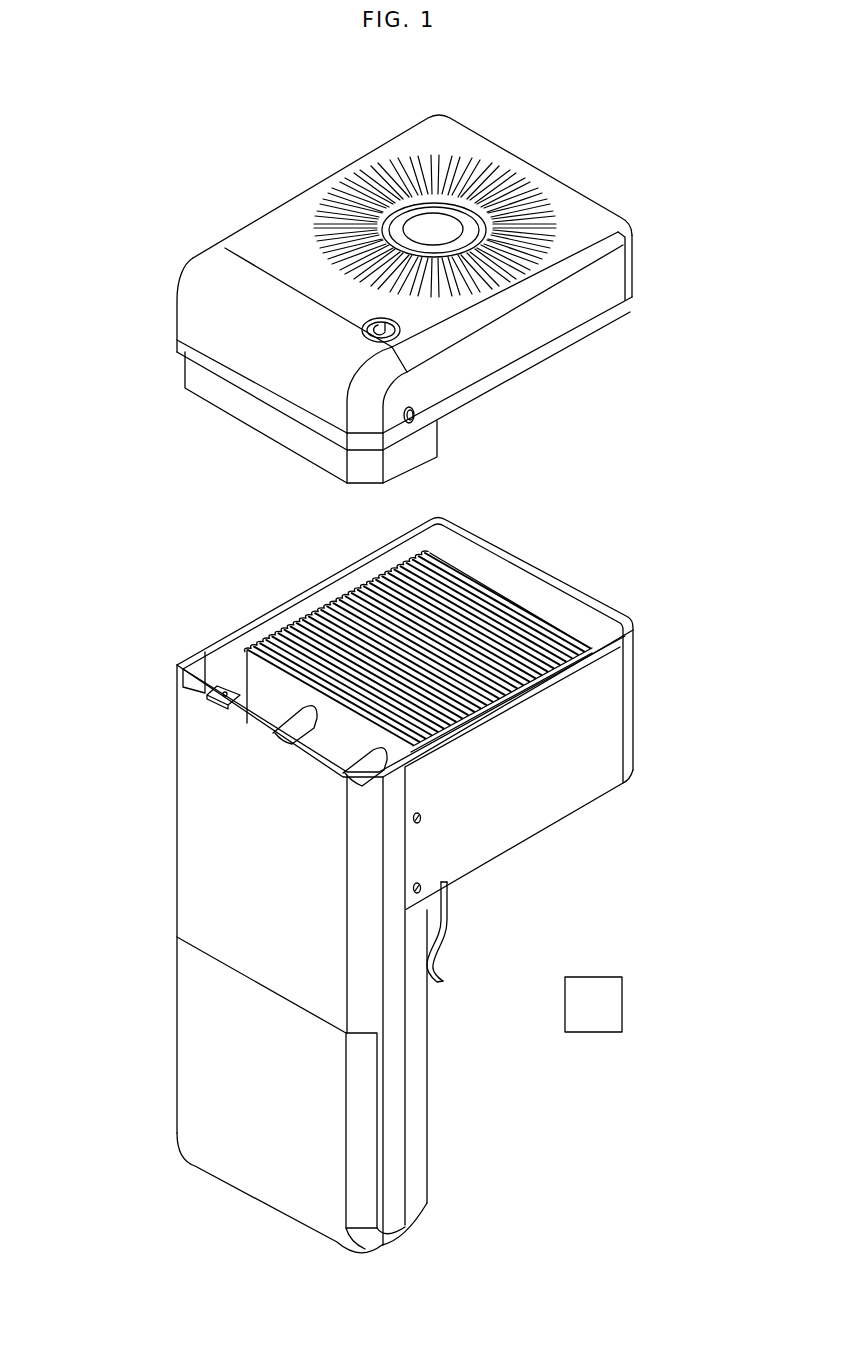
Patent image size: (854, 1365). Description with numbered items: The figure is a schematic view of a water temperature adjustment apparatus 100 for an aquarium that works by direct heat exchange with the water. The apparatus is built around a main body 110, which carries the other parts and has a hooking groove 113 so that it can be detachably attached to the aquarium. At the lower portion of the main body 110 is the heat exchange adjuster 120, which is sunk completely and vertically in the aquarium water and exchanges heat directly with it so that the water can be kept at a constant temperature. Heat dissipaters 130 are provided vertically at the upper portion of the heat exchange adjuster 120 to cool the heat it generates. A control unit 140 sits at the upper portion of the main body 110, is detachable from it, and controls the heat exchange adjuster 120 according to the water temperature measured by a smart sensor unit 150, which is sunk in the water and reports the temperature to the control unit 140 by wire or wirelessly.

The water temperature adjustment apparatus 100 is at (113, 90).
The main body 110 is at (185, 752).
The hooking groove 113 is at (447, 925).
The heat exchange adjuster 120 is at (185, 1020).
The heat dissipaters 130 is at (517, 602).
The control unit 140 is at (185, 318).
The smart sensor unit 150 is at (622, 1003).